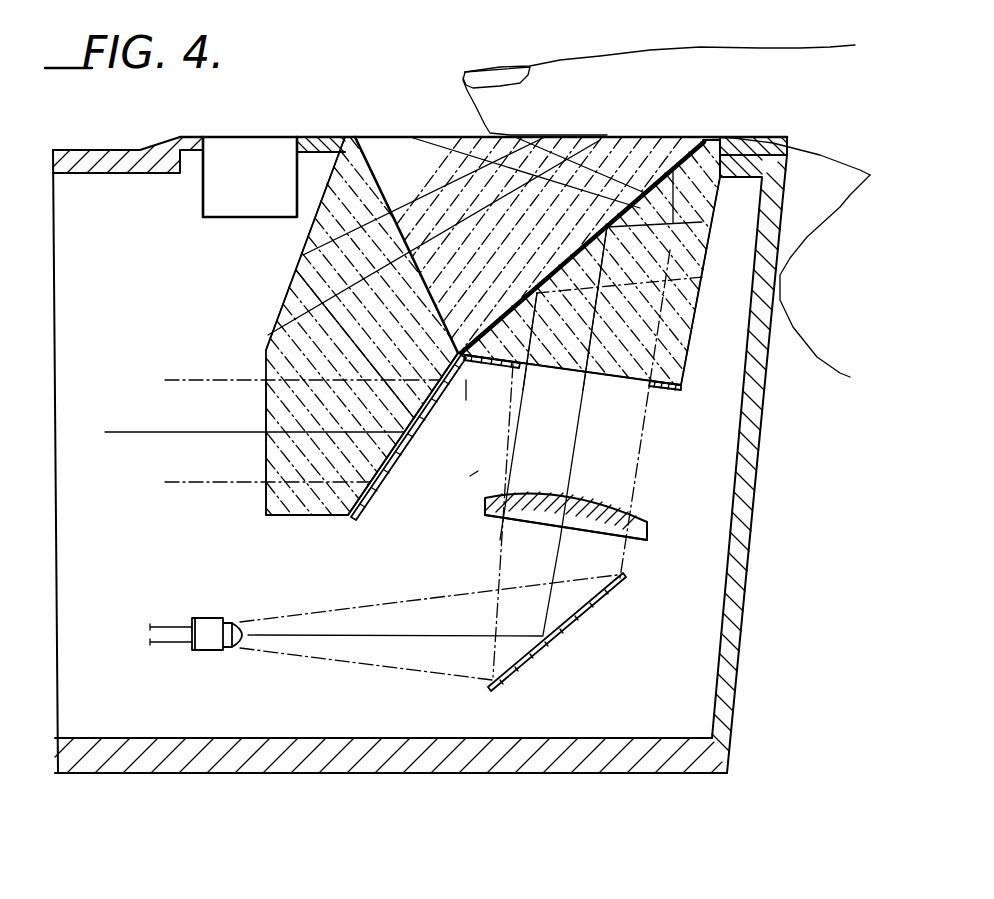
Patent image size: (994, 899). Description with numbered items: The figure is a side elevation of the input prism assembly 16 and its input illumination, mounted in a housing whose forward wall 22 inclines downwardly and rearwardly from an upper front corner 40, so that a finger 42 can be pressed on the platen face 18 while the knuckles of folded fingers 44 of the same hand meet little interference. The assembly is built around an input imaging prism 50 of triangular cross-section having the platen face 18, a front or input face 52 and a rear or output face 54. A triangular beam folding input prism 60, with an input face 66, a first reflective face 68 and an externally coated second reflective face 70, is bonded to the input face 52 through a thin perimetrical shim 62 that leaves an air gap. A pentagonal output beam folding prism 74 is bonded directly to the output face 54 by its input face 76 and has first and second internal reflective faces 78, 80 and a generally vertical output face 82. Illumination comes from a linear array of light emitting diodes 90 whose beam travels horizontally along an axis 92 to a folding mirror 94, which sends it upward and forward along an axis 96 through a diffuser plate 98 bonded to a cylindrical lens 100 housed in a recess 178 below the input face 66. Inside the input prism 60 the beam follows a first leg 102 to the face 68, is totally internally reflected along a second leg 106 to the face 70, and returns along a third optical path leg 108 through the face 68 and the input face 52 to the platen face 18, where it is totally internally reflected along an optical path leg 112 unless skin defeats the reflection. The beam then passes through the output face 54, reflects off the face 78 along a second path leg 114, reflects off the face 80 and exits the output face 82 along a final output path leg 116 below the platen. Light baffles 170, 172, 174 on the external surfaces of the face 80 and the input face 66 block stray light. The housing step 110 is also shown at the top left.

The input prism assembly 16 is at (465, 400).
The platen face 18 is at (386, 136).
The forward wall 22 is at (770, 462).
The upper front corner 40 is at (723, 137).
The finger 42 is at (625, 70).
The knuckles of folded fingers 44 is at (815, 243).
The input imaging prism 50 is at (440, 118).
The front or input face 52 is at (530, 293).
The rear or output face 54 is at (420, 278).
The beam folding input prism 60 is at (724, 286).
The shim 62 is at (705, 138).
The input face 66 is at (560, 376).
The first reflective face 68 is at (553, 300).
The second reflective face 70 is at (693, 313).
The output beam folding prism 74 is at (276, 300).
The input face 76 is at (406, 243).
The first internal reflective face 78 is at (268, 331).
The second internal reflective face 80 is at (408, 420).
The output face 82 is at (264, 458).
The light emitting diodes 90 is at (245, 606).
The axis 92 is at (402, 633).
The folding mirror 94 is at (586, 612).
The axis 96 is at (576, 440).
The diffuser plate 98 is at (574, 535).
The cylindrical lens 100 is at (605, 500).
The first leg 102 is at (600, 378).
The second leg 106 is at (630, 258).
The third optical path leg 108 is at (695, 222).
The housing step 110 is at (180, 135).
The optical path leg 112 is at (405, 202).
The second path leg 114 is at (355, 322).
The final output path leg 116 is at (135, 424).
The light baffle 170 is at (374, 506).
The light baffle 172 is at (472, 368).
The light baffle 174 is at (672, 388).
The recess 178 is at (476, 474).